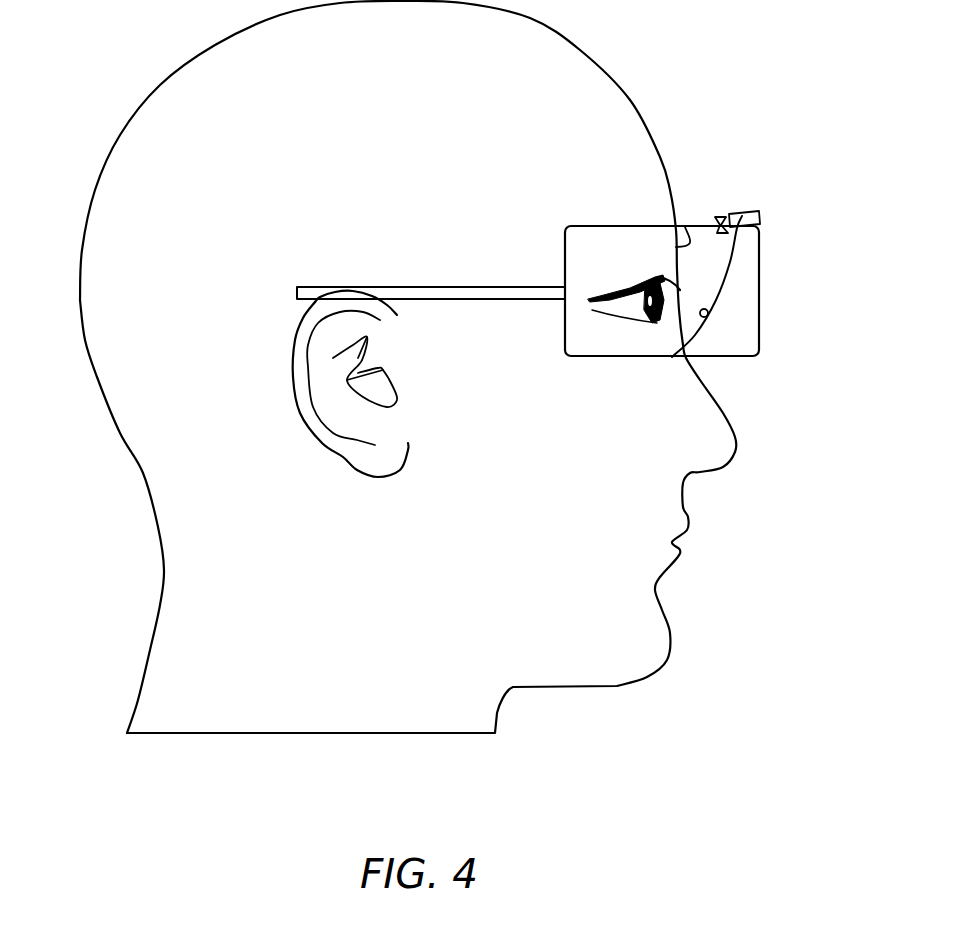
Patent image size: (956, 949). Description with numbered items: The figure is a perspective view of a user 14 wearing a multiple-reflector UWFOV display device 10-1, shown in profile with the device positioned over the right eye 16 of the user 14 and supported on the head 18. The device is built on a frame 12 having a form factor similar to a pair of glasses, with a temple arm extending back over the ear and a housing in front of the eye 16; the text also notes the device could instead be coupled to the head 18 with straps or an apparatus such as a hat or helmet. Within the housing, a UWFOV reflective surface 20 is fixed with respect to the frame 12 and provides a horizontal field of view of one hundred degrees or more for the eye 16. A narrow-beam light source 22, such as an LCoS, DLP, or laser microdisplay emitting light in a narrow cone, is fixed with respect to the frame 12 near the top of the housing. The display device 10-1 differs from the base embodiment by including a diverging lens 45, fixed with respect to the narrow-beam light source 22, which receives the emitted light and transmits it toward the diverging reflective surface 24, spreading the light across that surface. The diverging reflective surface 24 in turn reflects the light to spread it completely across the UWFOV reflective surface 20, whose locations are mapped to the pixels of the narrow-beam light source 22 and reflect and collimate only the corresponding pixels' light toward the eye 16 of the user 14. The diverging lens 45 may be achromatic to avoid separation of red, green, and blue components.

The multiple-reflector UWFOV display device 10-1 is at (577, 262).
The frame 12 is at (565, 340).
The user 14 is at (97, 378).
The eye 16 is at (630, 322).
The head 18 is at (392, 44).
The UWFOV reflective surface 20 is at (708, 316).
The narrow-beam light source 22 is at (761, 213).
The diverging reflective surface 24 is at (703, 227).
The diverging lens 45 is at (731, 228).